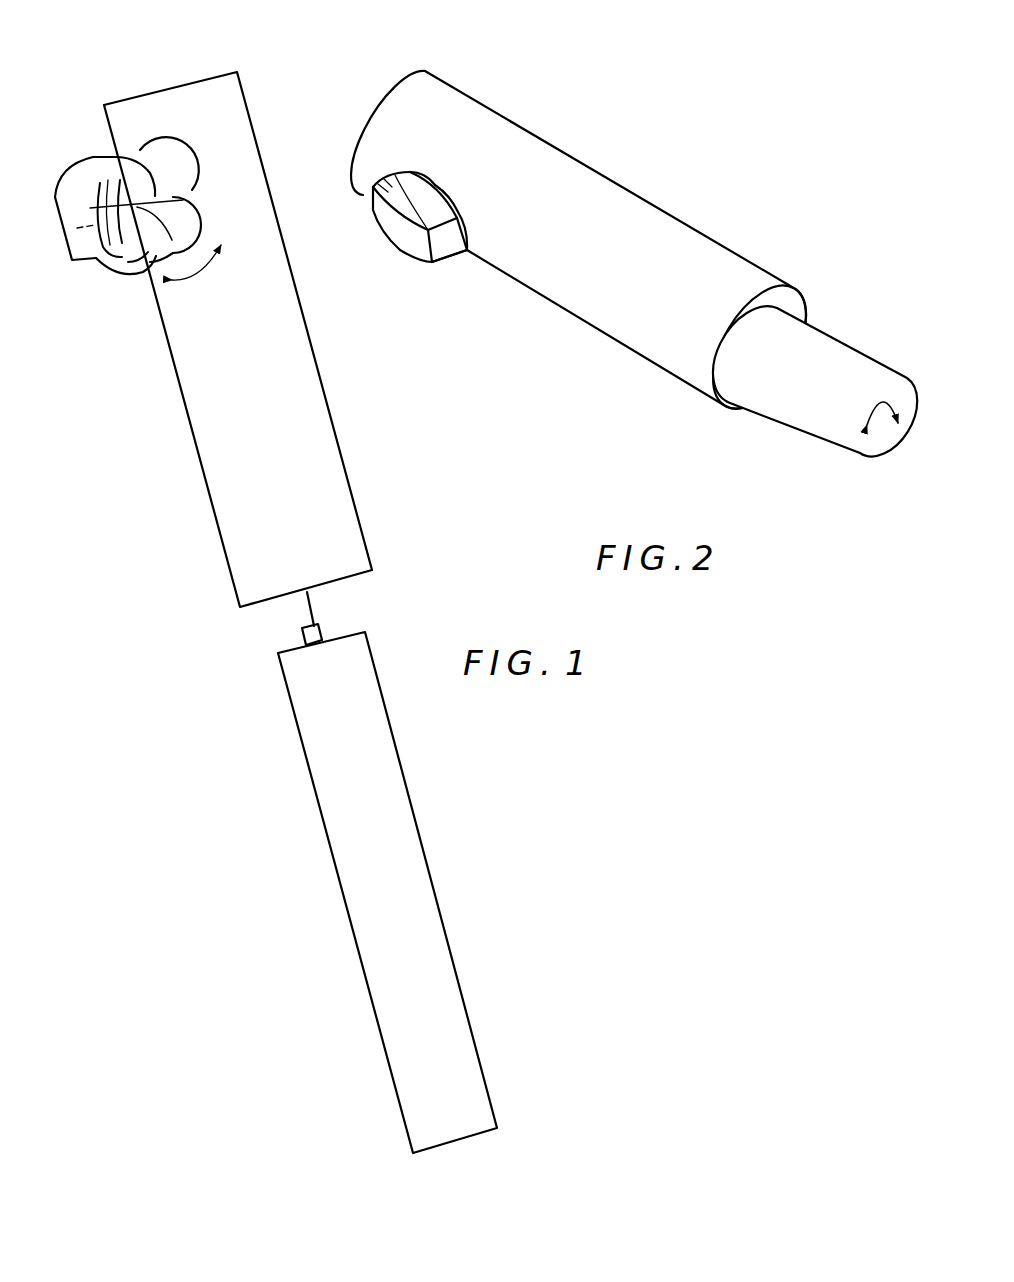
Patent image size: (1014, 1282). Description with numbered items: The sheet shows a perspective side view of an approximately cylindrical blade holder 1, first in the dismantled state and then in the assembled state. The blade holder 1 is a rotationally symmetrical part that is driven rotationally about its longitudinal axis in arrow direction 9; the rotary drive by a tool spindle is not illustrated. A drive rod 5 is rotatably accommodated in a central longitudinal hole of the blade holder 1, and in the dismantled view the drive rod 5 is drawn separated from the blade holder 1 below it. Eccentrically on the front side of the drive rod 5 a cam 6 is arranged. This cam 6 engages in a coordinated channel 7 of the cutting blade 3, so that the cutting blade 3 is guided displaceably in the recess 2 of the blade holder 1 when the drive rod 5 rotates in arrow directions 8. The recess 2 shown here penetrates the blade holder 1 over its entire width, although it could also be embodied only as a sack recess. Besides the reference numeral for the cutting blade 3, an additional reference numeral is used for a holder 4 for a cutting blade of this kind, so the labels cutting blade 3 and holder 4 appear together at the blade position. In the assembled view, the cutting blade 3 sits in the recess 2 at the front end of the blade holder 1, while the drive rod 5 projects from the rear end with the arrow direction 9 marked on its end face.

In FIG. 1, the blade holder 1 is at (296, 445).
In FIG. 2, the blade holder 1 is at (589, 200).
In FIG. 1, the recess 2 is at (180, 170).
In FIG. 1, the cutting blade 3 is at (116, 176).
In FIG. 2, the cutting blade 3 is at (442, 243).
In FIG. 1, the holder for a cutting blade 4 is at (108, 212).
In FIG. 2, the holder for a cutting blade 4 is at (411, 202).
In FIG. 1, the drive rod 5 is at (398, 835).
In FIG. 2, the drive rod 5 is at (817, 395).
In FIG. 1, the cam 6 is at (318, 625).
In FIG. 1, the channel 7 is at (145, 267).
In FIG. 1, the arrow directions 8 is at (198, 270).
In FIG. 2, the arrow direction 9 is at (885, 402).